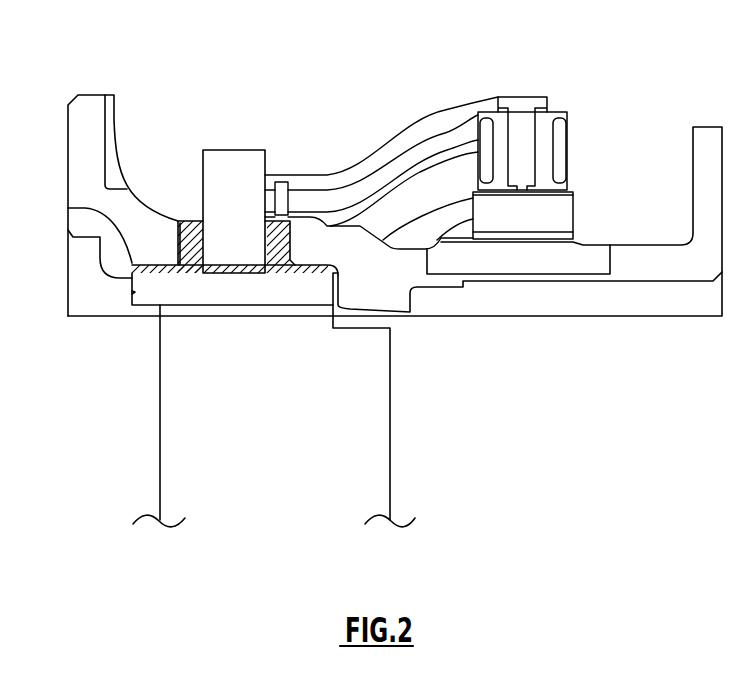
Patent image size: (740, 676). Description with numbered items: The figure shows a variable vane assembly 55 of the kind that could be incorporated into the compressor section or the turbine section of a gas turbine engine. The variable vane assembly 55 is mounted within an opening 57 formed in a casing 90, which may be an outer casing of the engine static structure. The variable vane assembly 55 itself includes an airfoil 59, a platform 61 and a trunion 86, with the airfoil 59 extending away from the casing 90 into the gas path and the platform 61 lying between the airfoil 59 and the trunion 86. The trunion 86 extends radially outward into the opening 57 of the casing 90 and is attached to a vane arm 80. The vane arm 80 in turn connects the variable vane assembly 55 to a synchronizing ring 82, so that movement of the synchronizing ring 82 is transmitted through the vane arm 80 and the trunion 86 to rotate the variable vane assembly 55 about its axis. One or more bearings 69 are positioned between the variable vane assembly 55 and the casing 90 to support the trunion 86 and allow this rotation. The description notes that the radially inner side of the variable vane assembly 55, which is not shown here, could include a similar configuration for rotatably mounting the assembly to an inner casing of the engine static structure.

The variable vane assembly 55 is at (315, 154).
The opening 57 is at (68, 207).
The airfoil 59 is at (392, 437).
The platform 61 is at (317, 296).
The bearing 69 is at (185, 220).
The vane arm 80 is at (381, 173).
The synchronizing ring 82 is at (563, 140).
The trunion 86 is at (202, 185).
The casing 90 is at (87, 132).